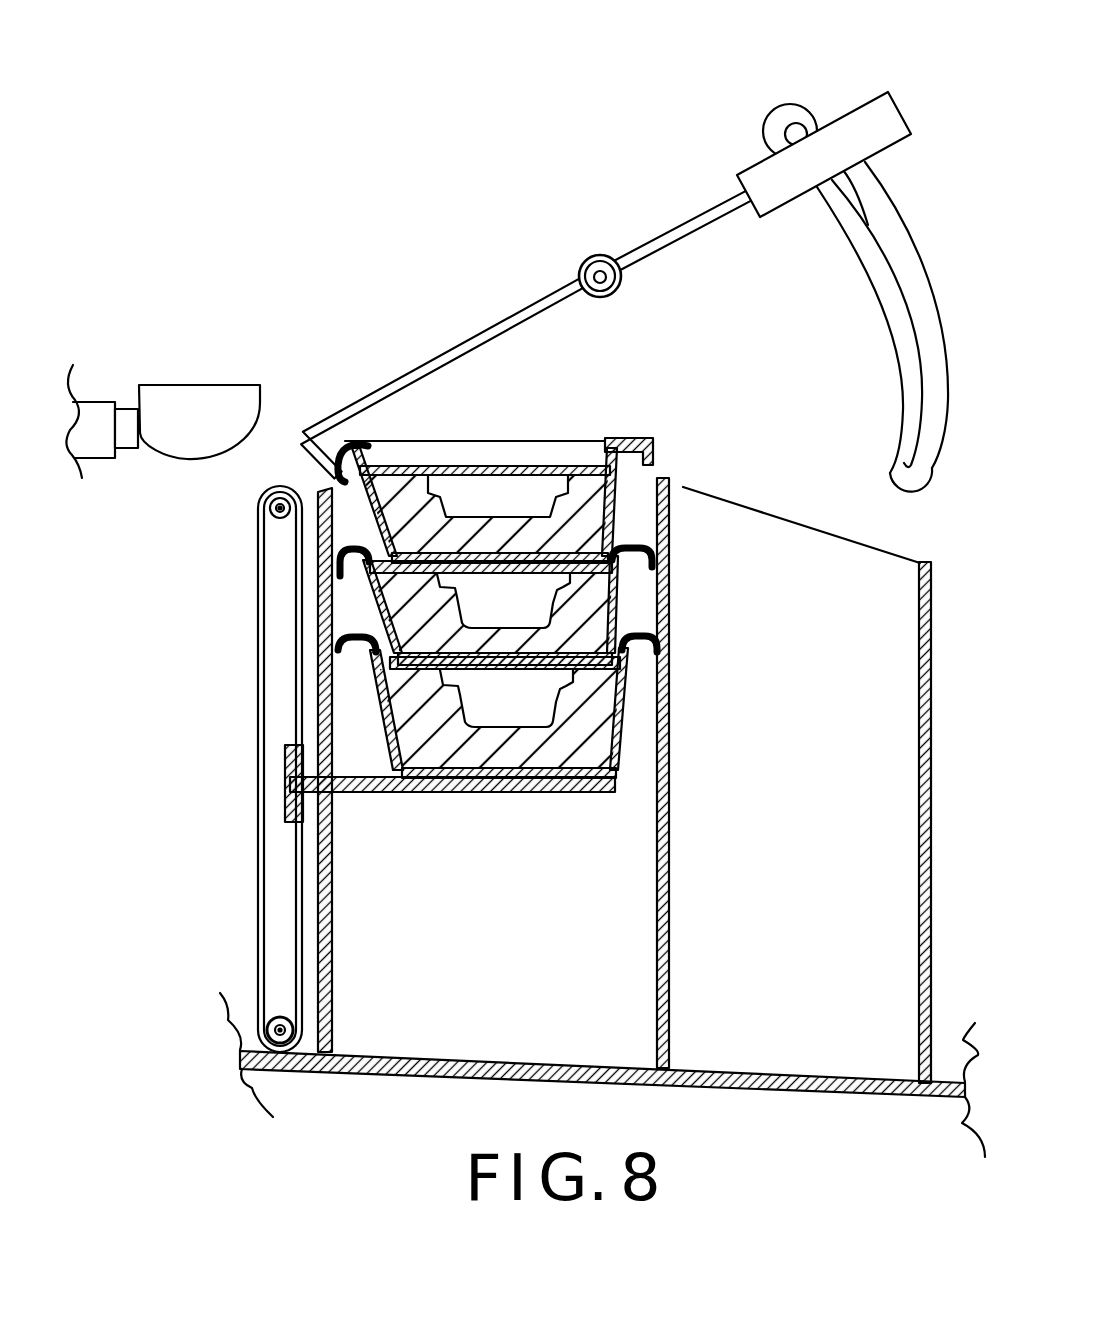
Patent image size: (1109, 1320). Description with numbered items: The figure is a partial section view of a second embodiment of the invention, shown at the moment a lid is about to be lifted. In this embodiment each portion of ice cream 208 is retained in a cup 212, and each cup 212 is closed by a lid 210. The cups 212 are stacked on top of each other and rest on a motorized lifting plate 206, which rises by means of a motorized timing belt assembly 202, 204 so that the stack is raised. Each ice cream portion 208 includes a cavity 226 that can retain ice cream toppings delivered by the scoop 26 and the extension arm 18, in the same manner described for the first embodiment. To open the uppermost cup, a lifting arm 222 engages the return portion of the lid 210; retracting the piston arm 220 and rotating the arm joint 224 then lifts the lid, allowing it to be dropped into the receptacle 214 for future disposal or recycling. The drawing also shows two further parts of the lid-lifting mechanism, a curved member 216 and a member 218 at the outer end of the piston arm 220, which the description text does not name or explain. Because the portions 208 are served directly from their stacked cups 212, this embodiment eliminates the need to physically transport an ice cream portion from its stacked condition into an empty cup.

The extension arm 18 is at (95, 400).
The scoop 26 is at (242, 405).
The motorized timing belt assembly 202 is at (258, 826).
The motorized timing belt assembly 204 is at (287, 752).
The motorized lifting plate 206 is at (423, 800).
The portion of ice cream 208 is at (588, 500).
The lid 210 is at (560, 512).
The cup 212 is at (530, 552).
The receptacle 214 is at (822, 605).
The curved guide 216 is at (871, 273).
The handle 218 is at (848, 110).
The piston arm 220 is at (665, 232).
The lifting arm 222 is at (466, 342).
The arm joint 224 is at (590, 256).
The cavity 226 is at (497, 497).